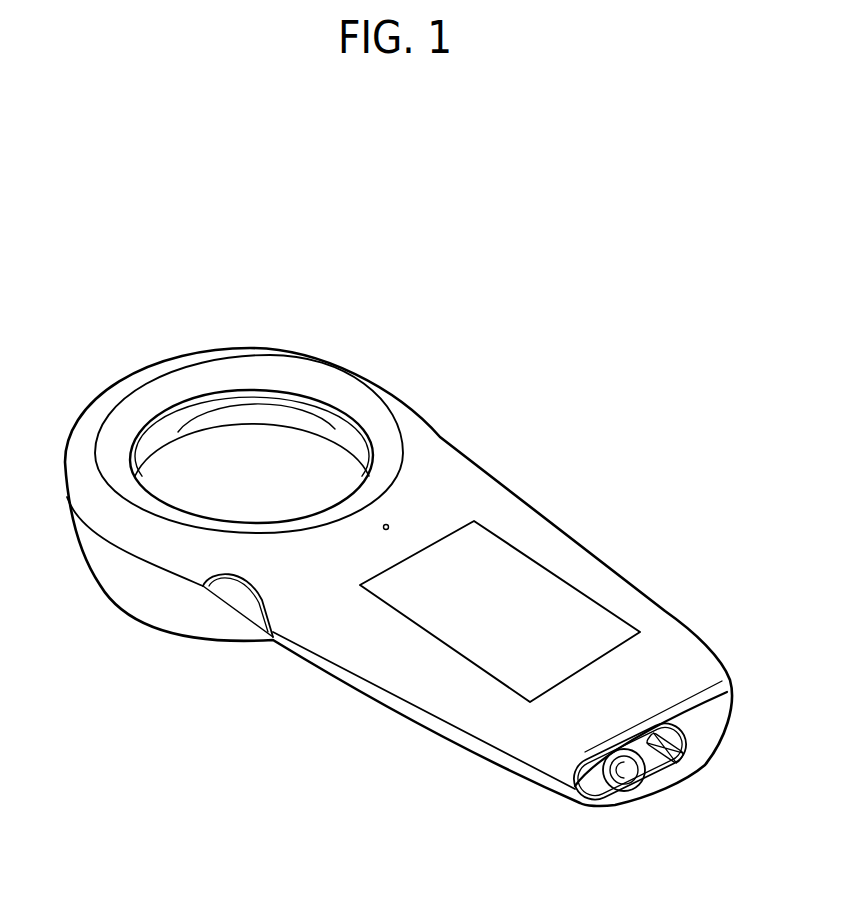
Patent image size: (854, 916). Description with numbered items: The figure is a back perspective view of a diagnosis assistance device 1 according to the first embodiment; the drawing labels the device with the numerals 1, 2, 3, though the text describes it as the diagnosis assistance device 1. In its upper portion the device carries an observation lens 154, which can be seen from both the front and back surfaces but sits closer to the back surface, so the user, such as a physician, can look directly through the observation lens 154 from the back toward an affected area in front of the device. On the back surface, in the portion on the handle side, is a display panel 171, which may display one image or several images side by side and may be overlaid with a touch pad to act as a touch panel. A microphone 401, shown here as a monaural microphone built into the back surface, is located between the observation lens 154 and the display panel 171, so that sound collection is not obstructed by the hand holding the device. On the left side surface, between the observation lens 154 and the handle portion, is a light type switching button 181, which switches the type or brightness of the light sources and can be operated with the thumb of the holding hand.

The diagnosis assistance device 1 is at (398, 504).
The imaging device (second embodiment) 2 is at (398, 504).
The imaging device (third embodiment) 3 is at (137, 267).
The observation lens 154 is at (260, 448).
The display panel 171 is at (507, 600).
The light type switching button 181 is at (242, 608).
The microphone 401 is at (388, 525).